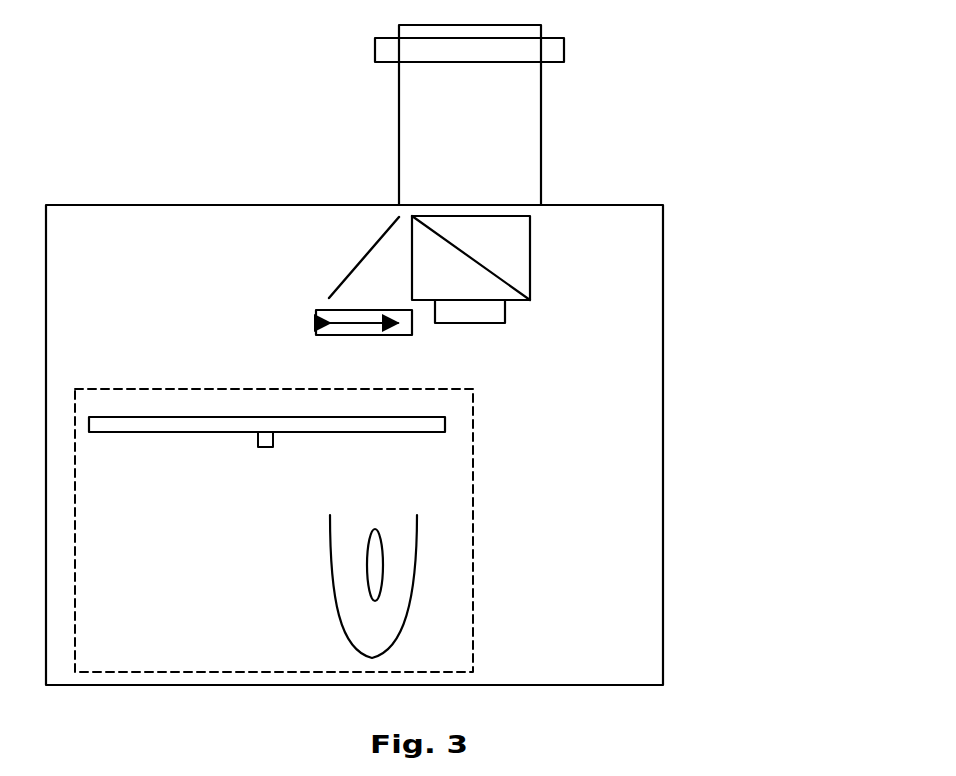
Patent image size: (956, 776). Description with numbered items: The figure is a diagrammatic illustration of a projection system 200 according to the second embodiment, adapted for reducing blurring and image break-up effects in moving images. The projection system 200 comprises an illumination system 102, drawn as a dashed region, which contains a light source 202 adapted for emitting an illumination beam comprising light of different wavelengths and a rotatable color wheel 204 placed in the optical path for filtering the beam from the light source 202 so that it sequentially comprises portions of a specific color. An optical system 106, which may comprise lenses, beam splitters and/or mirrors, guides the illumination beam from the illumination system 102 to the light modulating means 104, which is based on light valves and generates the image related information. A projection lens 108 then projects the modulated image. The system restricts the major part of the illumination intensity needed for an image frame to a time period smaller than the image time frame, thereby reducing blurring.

The projection system 200 is at (652, 72).
The projection lens 108 is at (399, 106).
The optical system 106 is at (296, 259).
The light modulating means 104 is at (473, 317).
The illumination system 102 is at (190, 672).
The rotatable color wheel 204 is at (215, 418).
The light source 202 is at (332, 587).